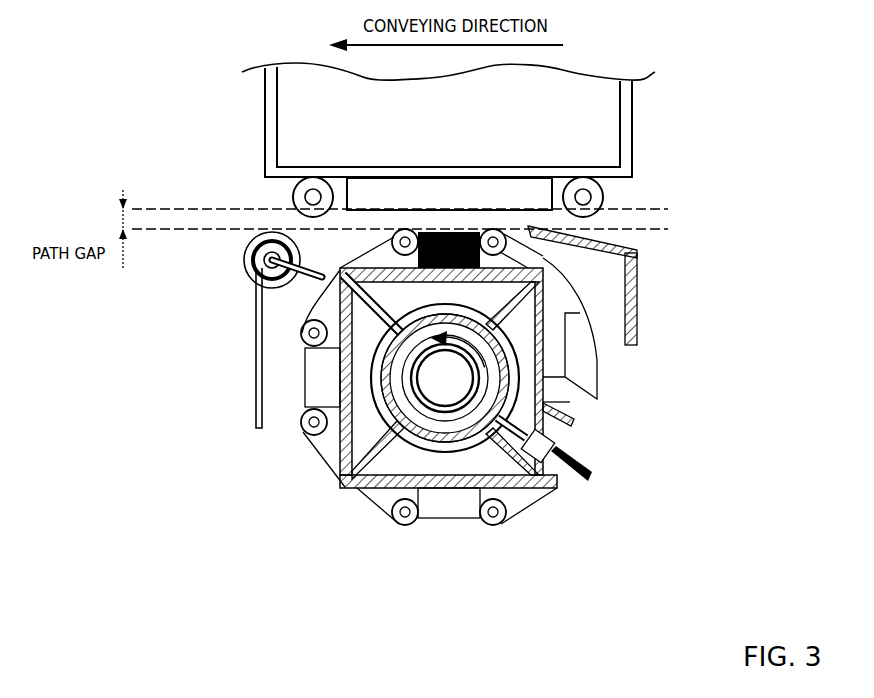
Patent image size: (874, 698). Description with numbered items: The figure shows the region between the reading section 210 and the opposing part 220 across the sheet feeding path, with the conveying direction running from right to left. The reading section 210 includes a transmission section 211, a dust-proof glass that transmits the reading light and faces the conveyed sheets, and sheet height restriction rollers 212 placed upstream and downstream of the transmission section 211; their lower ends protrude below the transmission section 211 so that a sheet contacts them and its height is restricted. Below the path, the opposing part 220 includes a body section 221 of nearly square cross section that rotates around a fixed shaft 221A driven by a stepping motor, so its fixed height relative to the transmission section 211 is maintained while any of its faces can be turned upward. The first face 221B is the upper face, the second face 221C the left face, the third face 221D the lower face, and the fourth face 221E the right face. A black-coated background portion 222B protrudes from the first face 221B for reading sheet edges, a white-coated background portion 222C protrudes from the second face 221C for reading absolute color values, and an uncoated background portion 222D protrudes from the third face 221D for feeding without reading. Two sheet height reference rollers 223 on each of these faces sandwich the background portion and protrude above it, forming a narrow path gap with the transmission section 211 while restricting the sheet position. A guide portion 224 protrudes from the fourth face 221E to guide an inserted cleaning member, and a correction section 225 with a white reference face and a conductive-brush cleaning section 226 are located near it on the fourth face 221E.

The reading section 210 is at (625, 120).
The transmission section 211 is at (503, 188).
The sheet height restriction roller 212 is at (601, 185).
The opposing part 220 is at (571, 535).
The body section 221 is at (342, 476).
The shaft 221A is at (435, 363).
The first face 221B is at (545, 255).
The second face 221C is at (300, 292).
The third face 221D is at (380, 490).
The fourth face 221E is at (570, 402).
The background portion 222B is at (483, 231).
The background portion 222C is at (330, 392).
The background portion 222D is at (447, 498).
The sheet height reference roller 223 is at (512, 232).
The guide portion 224 is at (572, 419).
The correction section 225 is at (597, 365).
The cleaning section 226 is at (566, 456).